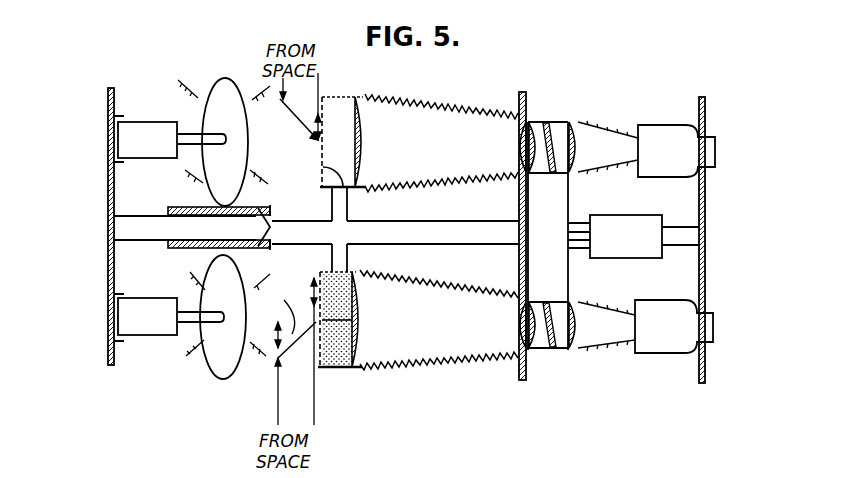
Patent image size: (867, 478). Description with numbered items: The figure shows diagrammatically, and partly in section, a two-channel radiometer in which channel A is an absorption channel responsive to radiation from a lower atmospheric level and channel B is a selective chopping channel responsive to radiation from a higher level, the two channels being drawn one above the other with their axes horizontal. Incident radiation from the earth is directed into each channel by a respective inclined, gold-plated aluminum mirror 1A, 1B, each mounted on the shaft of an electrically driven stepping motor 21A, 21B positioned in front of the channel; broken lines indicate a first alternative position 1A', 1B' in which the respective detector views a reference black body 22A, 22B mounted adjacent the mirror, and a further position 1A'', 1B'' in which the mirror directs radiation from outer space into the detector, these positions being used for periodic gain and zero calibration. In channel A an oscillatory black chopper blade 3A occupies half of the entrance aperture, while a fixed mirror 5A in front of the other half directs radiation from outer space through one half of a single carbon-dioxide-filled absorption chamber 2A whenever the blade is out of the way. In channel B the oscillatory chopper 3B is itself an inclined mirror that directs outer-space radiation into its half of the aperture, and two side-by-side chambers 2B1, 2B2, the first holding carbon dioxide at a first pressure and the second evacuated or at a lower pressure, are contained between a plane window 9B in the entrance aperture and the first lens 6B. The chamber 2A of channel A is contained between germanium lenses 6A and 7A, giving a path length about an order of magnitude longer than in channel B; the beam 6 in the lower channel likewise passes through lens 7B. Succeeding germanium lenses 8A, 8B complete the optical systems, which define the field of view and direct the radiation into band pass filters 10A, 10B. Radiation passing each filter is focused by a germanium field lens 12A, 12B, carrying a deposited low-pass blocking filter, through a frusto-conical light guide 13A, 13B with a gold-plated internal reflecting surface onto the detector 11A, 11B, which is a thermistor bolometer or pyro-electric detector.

The inclined mirror 1A is at (224, 134).
The mirror position 1A' is at (166, 185).
The mirror position 1A'' is at (277, 182).
The inclined mirror 1B is at (215, 329).
The mirror position 1B' is at (165, 273).
The mirror position 1B'' is at (163, 358).
The absorption chamber 2A is at (431, 100).
The chamber 2B1 is at (340, 301).
The chamber 2B2 is at (340, 350).
The chopper blade 3A is at (348, 191).
The oscillatory chopper 3B is at (290, 306).
The fixed mirror 5A is at (302, 131).
The beam 6 is at (386, 378).
The germanium lens 6A is at (366, 153).
The germanium lens 6B is at (362, 334).
The germanium lens 7A is at (517, 141).
The germanium lens 7B is at (517, 322).
The germanium lens 8A is at (539, 168).
The germanium lens 8B is at (538, 336).
The plane window 9B is at (332, 366).
The band pass filter 10A is at (553, 130).
The band pass filter 10B is at (553, 302).
The detector 11A is at (690, 164).
The detector 11B is at (690, 341).
The germanium field lens 12A is at (580, 124).
The germanium field lens 12B is at (579, 304).
The frusto-conical light guide 13A is at (600, 172).
The frusto-conical light guide 13B is at (604, 343).
The stepping motor 21A is at (166, 154).
The stepping motor 21B is at (164, 330).
The reference black body 22A is at (271, 203).
The reference black body 22B is at (266, 250).